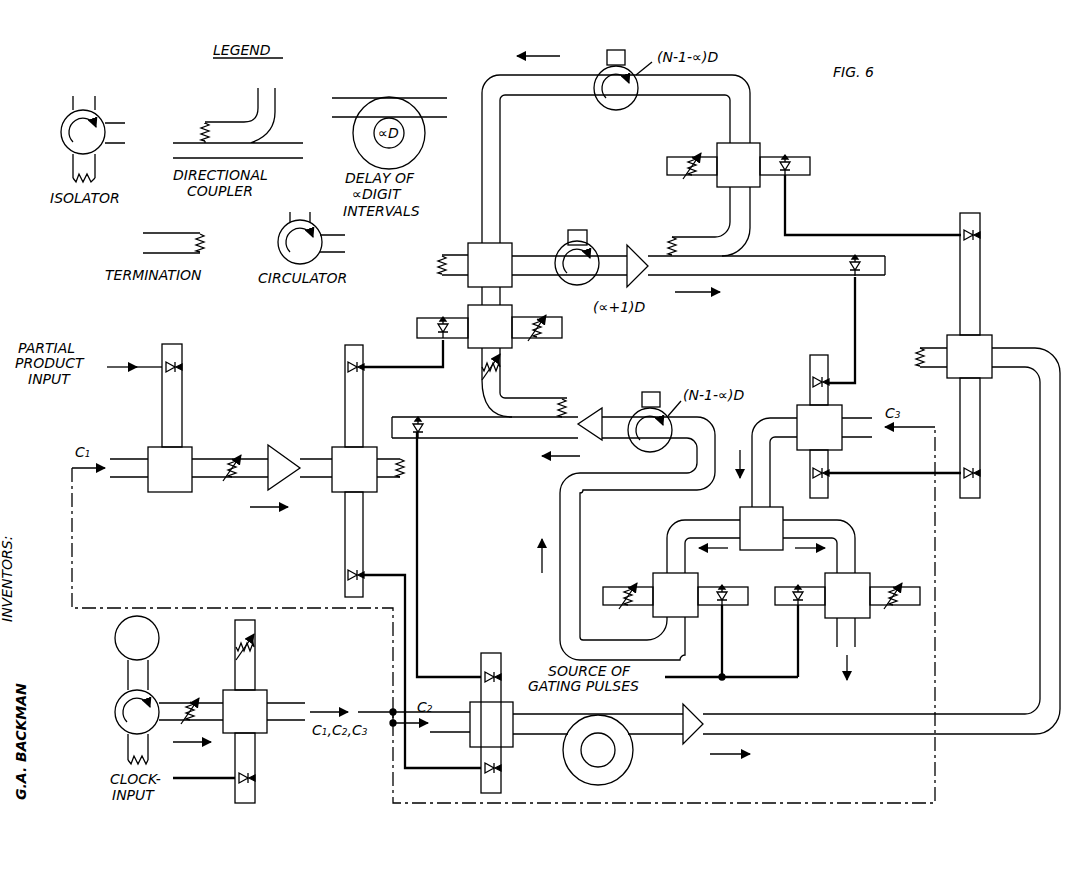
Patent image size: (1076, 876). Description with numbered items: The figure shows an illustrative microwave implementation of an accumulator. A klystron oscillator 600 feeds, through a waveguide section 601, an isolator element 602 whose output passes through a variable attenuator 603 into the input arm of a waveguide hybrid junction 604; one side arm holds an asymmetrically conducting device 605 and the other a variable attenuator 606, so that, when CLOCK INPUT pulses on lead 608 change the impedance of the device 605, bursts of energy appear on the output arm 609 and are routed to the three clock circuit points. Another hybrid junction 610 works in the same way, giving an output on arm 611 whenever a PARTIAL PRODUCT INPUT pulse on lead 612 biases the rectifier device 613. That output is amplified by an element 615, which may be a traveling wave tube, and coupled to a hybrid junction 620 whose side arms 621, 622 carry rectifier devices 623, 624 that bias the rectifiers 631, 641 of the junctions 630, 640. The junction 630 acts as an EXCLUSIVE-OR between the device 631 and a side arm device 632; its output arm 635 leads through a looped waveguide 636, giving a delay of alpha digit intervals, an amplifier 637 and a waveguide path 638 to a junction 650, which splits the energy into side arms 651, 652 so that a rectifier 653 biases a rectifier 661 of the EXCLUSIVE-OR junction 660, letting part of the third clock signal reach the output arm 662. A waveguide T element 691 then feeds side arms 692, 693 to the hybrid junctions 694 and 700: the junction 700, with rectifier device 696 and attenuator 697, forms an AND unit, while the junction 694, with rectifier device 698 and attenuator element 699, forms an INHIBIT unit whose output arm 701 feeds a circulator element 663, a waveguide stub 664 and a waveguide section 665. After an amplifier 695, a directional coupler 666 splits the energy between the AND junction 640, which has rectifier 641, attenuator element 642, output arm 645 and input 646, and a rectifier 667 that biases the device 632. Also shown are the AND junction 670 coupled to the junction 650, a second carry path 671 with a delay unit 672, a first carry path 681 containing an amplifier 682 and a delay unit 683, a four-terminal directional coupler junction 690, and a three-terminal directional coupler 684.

The klystron oscillator 600 is at (115, 637).
The waveguide section 601 is at (128, 673).
The isolator element 602 is at (115, 712).
The variable microwave attenuator element 603 is at (188, 700).
The waveguide hybrid junction 604 is at (257, 692).
The asymmetrically conducting device 605 is at (256, 785).
The variable microwave attenuator element 606 is at (236, 636).
The lead 608 is at (190, 778).
The output arm 609 is at (290, 715).
The waveguide hybrid junction 610 is at (190, 446).
The arm 611 is at (207, 479).
The lead 612 is at (117, 367).
The rectifier device 613 is at (175, 360).
The amplifier element 615 is at (282, 444).
The hybrid junction 620 is at (338, 489).
The side arm 621 is at (346, 390).
The side arm 622 is at (346, 548).
The rectifier device 623 is at (345, 577).
The rectifier device 624 is at (350, 365).
The hybrid junction 630 is at (478, 738).
The rectifier device 631 is at (500, 772).
The side arm rectifier device 632 is at (488, 660).
The output arm 635 is at (530, 737).
The looped section of waveguide 636 is at (619, 765).
The amplifier 637 is at (691, 722).
The waveguide path 638 is at (839, 728).
The hybrid junction 640 is at (510, 312).
The rectifier device 641 is at (447, 320).
The attenuator element 642 is at (563, 333).
The arm 645 is at (497, 298).
The input 646 is at (510, 366).
The junction 650 is at (990, 326).
The side arm 651 is at (982, 291).
The side arm 652 is at (982, 414).
The rectifier 653 is at (975, 468).
The junction 660 is at (802, 406).
The rectifier 661 is at (830, 479).
The output arm 662 is at (772, 432).
The circulator element 663 is at (650, 452).
The waveguide stub 664 is at (649, 392).
The waveguide section 665 is at (612, 427).
The directional coupler 666 is at (530, 439).
The rectifier 667 is at (415, 424).
The junction 670 is at (753, 151).
The second carry path 671 is at (741, 96).
The delay unit 672 is at (603, 68).
The first carry path 681 is at (755, 270).
The amplifier 682 is at (645, 243).
The delay unit 683 is at (585, 244).
The directional coupler 684 is at (690, 254).
The junction 690 is at (505, 243).
The waveguide T element 691 is at (740, 510).
The side arm 692 is at (700, 524).
The side arm 693 is at (818, 525).
The hybrid junction 694 is at (661, 574).
The amplifier 695 is at (597, 417).
The rectifier device 696 is at (796, 606).
The attenuator 697 is at (893, 604).
The rectifier device 698 is at (725, 603).
The attenuator element 699 is at (626, 592).
The hybrid junction 700 is at (860, 578).
The output arm 701 is at (678, 630).